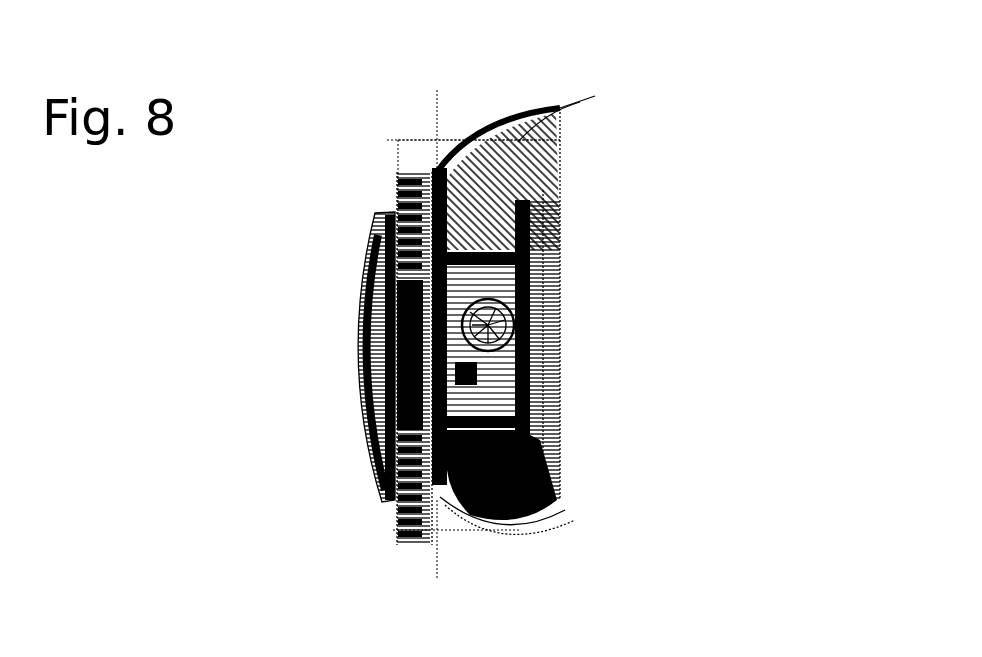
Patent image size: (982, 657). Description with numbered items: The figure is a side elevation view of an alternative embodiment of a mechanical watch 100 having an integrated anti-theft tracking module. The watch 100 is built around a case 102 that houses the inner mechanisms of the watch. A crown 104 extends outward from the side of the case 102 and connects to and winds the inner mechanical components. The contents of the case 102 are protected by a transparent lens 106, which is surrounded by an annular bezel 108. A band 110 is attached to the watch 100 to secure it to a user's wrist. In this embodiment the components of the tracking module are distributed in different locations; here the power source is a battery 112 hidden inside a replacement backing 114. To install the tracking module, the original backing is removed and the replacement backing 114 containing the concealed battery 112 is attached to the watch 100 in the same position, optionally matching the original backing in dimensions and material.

The watch 100 is at (489, 296).
The case 102 is at (400, 130).
The crown 104 is at (496, 320).
The transparent lens 106 is at (357, 350).
The annular bezel 108 is at (368, 224).
The band 110 is at (550, 98).
The battery 112 is at (552, 338).
The replacement backing 114 is at (558, 415).